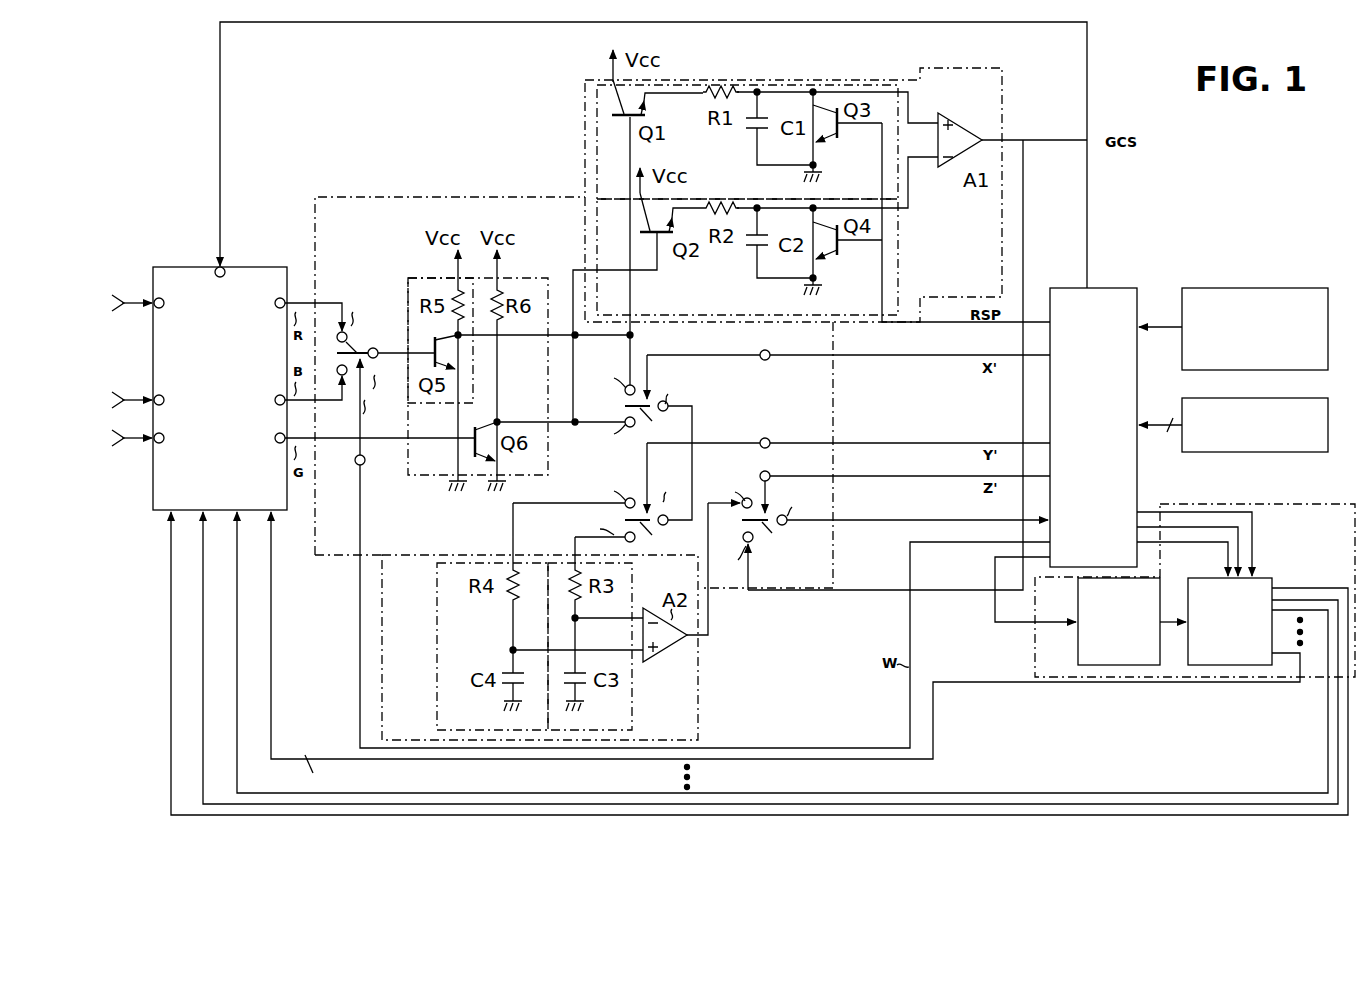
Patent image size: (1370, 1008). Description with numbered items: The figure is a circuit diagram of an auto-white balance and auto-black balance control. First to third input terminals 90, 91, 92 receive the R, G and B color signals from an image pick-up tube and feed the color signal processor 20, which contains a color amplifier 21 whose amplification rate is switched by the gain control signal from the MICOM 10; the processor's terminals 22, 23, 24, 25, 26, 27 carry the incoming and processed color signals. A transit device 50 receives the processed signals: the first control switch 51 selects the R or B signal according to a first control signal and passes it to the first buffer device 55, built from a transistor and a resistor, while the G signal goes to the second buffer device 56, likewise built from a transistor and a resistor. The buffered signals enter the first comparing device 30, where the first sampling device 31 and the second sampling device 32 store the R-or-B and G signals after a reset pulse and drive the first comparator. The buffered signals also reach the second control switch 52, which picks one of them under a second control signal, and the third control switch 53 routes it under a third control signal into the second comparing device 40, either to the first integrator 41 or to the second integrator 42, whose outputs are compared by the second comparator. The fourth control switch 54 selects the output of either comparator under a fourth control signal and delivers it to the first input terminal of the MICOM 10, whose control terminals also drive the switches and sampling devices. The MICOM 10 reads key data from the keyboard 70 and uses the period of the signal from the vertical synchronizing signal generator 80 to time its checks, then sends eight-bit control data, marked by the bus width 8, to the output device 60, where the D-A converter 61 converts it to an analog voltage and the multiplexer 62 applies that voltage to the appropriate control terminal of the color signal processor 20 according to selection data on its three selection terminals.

The microcomputer (MICOM) 10 is at (1102, 288).
The color signal processor 20 is at (176, 263).
The color amplifier 21 is at (222, 281).
The R input terminal 22 is at (174, 306).
The G input terminal 23 is at (166, 389).
The B input terminal 24 is at (167, 449).
The R output terminal 25 is at (266, 306).
The B output terminal 26 is at (275, 389).
The G output terminal 27 is at (274, 449).
The first comparing device 30 is at (806, 84).
The first sampling device 31 is at (898, 103).
The second sampling device 32 is at (898, 285).
The second comparing device 40 is at (700, 662).
The first integrator 41 is at (622, 702).
The second integrator 42 is at (442, 600).
The transit device 50 is at (362, 207).
The first control switch 51 is at (358, 350).
The second control switch 52 is at (821, 428).
The third control switch 53 is at (781, 496).
The fourth control switch 54 is at (879, 523).
The first buffer device 55 is at (425, 287).
The second buffer device 56 is at (410, 468).
The output device 60 is at (1300, 505).
The D-A converter 61 is at (1162, 582).
The multiplexer 62 is at (1250, 582).
The keyboard 70 is at (1207, 452).
The vertical synchronizing signal generator 80 is at (1229, 288).
The first input terminal 90 is at (120, 295).
The second input terminal 91 is at (120, 396).
The third input terminal 92 is at (120, 446).
The 8-bit data bus 8 is at (998, 600).